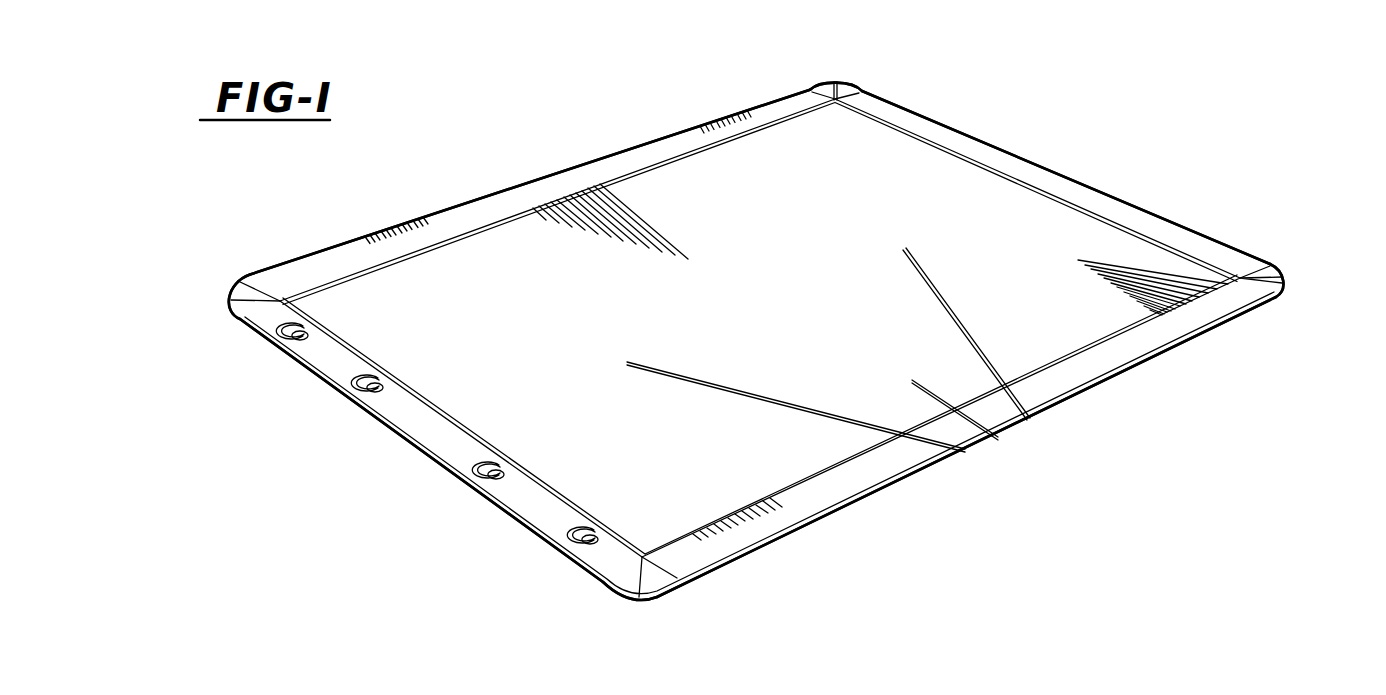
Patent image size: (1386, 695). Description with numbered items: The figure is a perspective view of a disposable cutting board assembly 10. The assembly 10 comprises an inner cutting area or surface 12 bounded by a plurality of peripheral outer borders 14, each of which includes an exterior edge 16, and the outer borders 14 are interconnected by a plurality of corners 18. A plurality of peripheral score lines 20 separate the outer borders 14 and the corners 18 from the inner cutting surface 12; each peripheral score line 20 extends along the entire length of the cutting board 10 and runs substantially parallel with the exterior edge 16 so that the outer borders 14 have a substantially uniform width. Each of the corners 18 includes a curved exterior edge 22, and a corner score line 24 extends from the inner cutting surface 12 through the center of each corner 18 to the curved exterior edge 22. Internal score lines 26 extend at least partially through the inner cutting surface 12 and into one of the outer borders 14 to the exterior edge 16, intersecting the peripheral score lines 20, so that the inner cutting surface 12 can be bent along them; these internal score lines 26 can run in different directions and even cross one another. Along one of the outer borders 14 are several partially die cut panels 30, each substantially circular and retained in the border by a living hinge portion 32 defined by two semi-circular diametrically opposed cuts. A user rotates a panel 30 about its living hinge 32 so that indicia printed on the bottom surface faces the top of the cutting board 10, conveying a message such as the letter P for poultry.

The cutting board assembly 10 is at (1094, 443).
The inner cutting surface 12 is at (776, 254).
The peripheral outer borders 14 is at (561, 176).
The exterior edge 16 is at (437, 215).
The corners 18 is at (853, 88).
The peripheral score lines 20 is at (684, 153).
The curved exterior edge 22 is at (828, 85).
The corner score line 24 is at (836, 82).
The internal score line 26 is at (745, 396).
The die cut panel 30 is at (297, 335).
The living hinge portion 32 is at (278, 332).